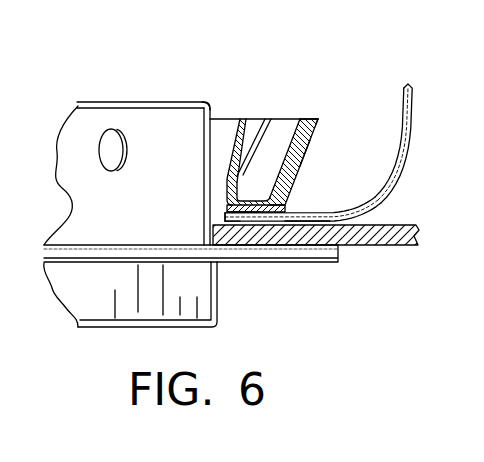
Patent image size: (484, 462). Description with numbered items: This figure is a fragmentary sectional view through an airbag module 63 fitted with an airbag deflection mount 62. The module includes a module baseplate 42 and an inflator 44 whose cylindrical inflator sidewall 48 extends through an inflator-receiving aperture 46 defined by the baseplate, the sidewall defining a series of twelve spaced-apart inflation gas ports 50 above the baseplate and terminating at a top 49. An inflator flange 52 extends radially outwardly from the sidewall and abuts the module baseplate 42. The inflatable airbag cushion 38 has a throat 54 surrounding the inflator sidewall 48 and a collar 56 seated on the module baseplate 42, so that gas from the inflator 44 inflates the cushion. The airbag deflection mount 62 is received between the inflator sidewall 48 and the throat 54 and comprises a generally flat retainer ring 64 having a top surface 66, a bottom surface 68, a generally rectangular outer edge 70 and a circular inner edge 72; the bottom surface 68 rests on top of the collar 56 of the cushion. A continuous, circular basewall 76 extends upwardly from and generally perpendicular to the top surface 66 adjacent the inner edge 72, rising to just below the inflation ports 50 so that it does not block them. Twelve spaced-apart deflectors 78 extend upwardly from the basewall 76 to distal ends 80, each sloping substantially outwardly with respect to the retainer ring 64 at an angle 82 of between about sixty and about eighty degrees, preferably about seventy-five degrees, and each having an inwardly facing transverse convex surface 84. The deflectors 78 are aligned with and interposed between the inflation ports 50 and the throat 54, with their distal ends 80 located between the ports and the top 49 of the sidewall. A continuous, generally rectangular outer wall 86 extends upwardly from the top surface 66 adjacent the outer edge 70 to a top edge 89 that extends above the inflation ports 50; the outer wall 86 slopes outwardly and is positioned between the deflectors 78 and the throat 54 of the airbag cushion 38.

The inflatable airbag cushion 38 is at (340, 147).
The module baseplate 42 is at (378, 246).
The inflator 44 is at (110, 100).
The inflator-receiving aperture 46 is at (212, 228).
The inflator sidewall 48 is at (136, 108).
The top of the inflator sidewall 49 is at (209, 104).
The inflation gas ports 50 is at (130, 149).
The inflator flange 52 is at (137, 263).
The throat 54 is at (401, 160).
The collar 56 is at (374, 213).
The airbag deflection mount 62 is at (303, 175).
The airbag module 63 is at (271, 171).
The retainer ring 64 is at (243, 228).
The top surface 66 is at (284, 206).
The bottom surface 68 is at (256, 228).
The outer edge 70 is at (303, 225).
The inner edge 72 is at (224, 232).
The basewall 76 is at (226, 183).
The deflectors 78 is at (258, 116).
The distal ends 80 is at (256, 195).
The angle 82 is at (311, 119).
The transverse convex surface 84 is at (243, 159).
The outer wall 86 is at (309, 146).
The top edge 89 is at (319, 120).